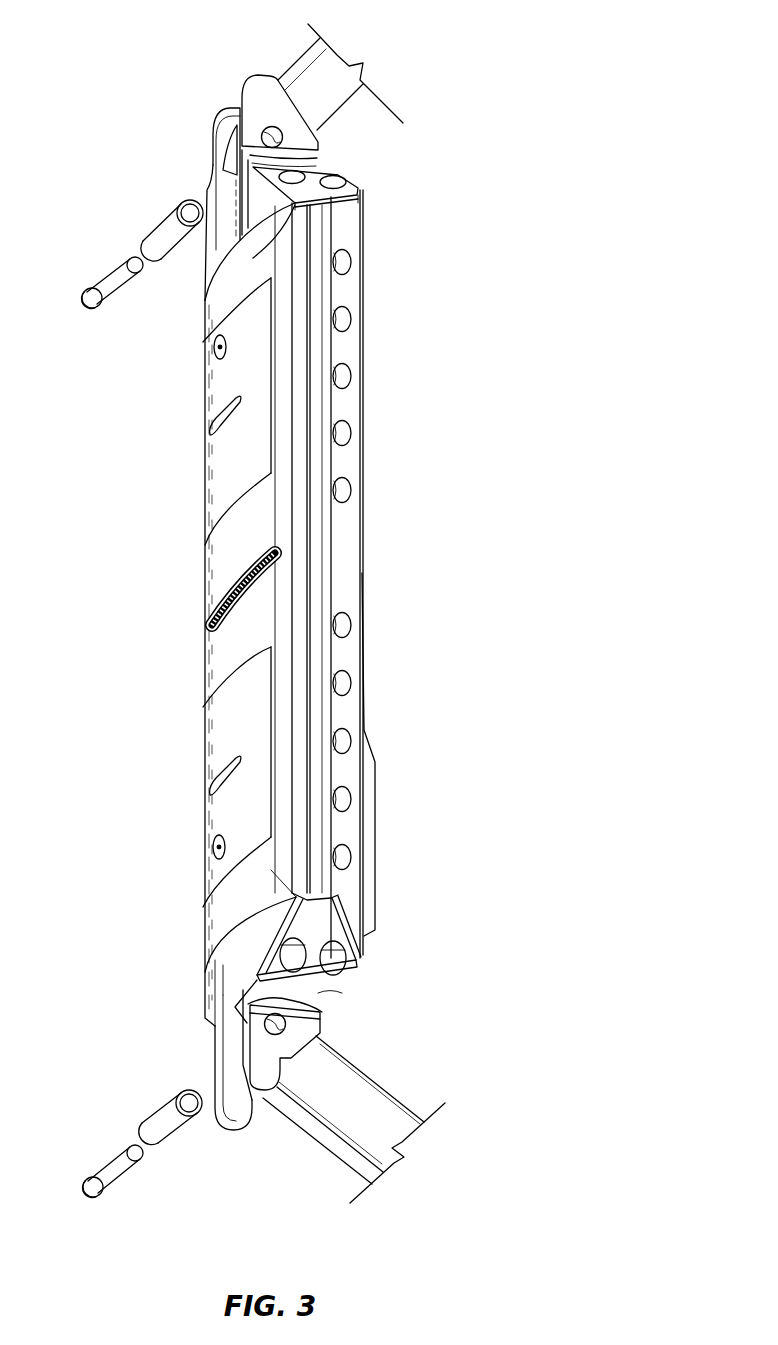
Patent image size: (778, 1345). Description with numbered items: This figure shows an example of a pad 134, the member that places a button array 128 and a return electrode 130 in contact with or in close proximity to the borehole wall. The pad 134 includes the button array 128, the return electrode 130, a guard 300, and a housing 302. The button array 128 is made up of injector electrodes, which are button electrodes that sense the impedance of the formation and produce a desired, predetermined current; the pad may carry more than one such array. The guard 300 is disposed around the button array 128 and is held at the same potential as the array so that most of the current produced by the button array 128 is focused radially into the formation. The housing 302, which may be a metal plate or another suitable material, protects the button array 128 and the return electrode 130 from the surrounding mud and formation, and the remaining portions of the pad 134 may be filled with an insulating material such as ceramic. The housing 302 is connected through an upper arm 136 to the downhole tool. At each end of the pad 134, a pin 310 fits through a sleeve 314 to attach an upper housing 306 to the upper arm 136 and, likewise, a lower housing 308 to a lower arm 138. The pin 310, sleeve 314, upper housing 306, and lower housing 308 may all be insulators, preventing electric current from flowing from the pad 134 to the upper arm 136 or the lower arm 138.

The upper arm 136 is at (332, 60).
The upper housing 306 is at (221, 100).
The sleeve 314 is at (163, 224).
The pin 310 is at (108, 273).
The housing 302 is at (253, 258).
The return electrode 130 is at (210, 402).
The button array 128 is at (236, 562).
The pad 134 is at (379, 549).
The guard 300 is at (207, 640).
The lower arm 138 is at (380, 1107).
The lower housing 308 is at (189, 1047).